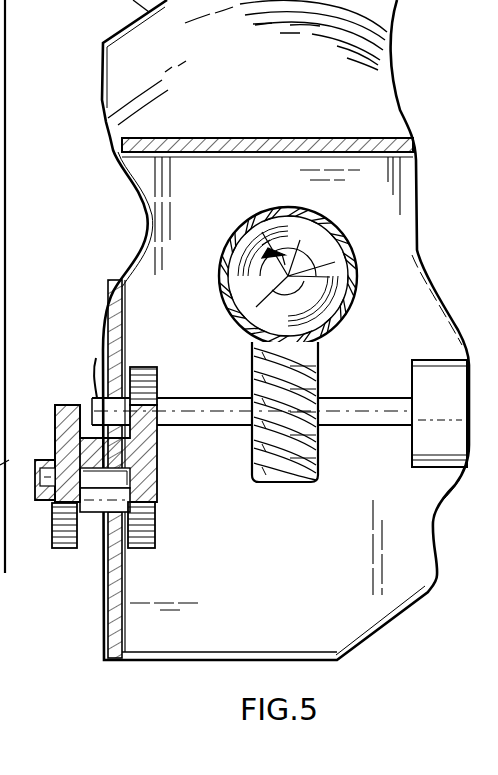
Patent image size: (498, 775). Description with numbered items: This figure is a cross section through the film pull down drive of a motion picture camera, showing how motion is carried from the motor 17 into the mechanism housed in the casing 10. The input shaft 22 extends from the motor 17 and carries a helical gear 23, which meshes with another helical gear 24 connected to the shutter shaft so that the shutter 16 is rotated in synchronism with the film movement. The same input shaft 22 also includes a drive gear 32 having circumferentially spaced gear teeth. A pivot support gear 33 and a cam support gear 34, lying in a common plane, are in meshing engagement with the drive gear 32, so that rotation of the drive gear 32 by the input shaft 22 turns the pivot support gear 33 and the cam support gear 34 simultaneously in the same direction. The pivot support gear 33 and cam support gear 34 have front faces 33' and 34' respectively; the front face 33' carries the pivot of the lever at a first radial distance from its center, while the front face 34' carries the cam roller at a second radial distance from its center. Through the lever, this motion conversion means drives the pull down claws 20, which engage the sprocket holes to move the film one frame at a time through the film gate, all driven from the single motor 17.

The casing 10 is at (258, 137).
The shutter 16 is at (7, 116).
The motor 17 is at (426, 360).
The pull down claws 20 is at (5, 467).
The input shaft 22 is at (222, 425).
The helical gear 23 is at (318, 382).
The helical gear 24 is at (258, 218).
The drive gear 32 is at (132, 367).
The pivot support gear 33 is at (131, 458).
The front face of pivot support gear 33' is at (57, 431).
The cam support gear 34 is at (160, 540).
The front face of cam support gear 34' is at (68, 549).